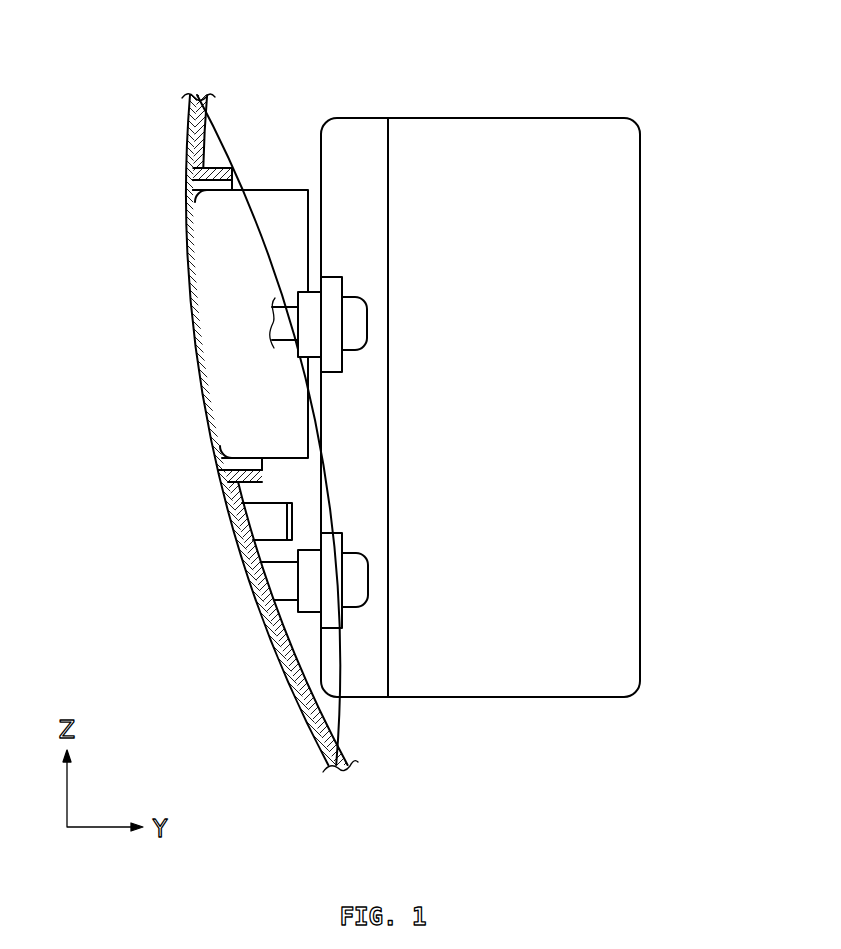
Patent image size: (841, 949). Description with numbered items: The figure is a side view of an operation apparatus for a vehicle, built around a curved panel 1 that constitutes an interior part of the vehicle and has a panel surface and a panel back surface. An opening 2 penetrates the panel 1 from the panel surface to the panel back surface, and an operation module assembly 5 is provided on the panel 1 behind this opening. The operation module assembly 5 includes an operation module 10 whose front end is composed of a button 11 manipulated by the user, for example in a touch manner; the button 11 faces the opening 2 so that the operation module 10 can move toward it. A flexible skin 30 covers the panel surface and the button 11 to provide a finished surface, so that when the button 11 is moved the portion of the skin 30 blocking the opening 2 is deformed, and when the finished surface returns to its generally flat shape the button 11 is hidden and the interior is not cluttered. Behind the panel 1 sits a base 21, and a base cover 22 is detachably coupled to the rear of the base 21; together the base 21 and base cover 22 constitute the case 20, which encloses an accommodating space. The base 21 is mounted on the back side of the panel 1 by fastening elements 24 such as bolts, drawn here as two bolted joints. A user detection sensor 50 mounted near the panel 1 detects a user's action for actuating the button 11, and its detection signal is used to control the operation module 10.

The panel 1 is at (207, 125).
The opening 2 is at (218, 194).
The operation module assembly 5 is at (420, 386).
The operation module 10 is at (219, 259).
The button 11 is at (218, 348).
The case 20 is at (480, 348).
The base 21 is at (370, 133).
The base cover 22 is at (514, 372).
The fastening elements 24 is at (358, 320).
The skin 30 is at (270, 638).
The user detection sensor 50 is at (250, 522).